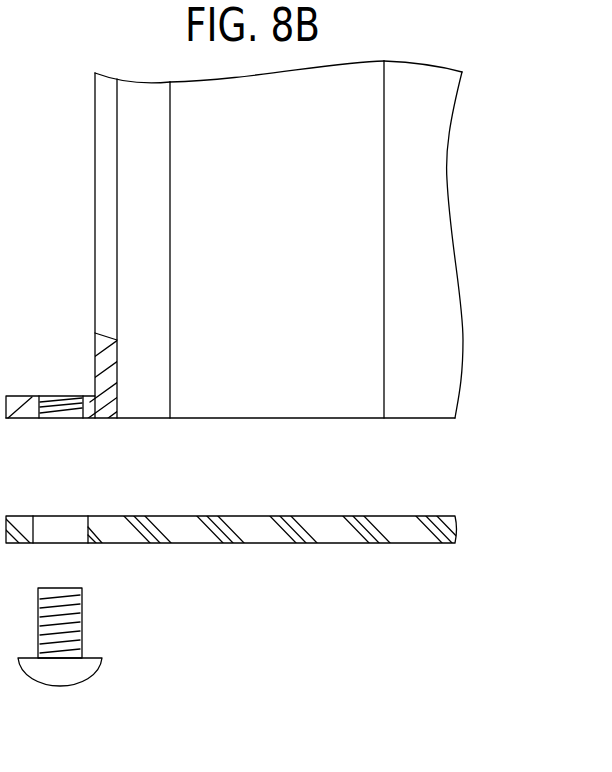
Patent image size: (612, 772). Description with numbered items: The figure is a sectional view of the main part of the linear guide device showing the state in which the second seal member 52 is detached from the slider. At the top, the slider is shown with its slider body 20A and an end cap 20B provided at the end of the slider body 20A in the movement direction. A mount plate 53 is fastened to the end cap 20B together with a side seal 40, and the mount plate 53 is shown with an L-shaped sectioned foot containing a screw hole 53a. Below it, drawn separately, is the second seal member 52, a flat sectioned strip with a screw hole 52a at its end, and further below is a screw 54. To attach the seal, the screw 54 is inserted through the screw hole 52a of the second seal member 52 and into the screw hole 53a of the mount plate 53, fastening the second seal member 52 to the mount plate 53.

The mount plate 53 is at (100, 123).
The screw hole 53a is at (50, 396).
The side seal 40 is at (143, 413).
The end cap 20B is at (266, 413).
The slider body 20A is at (420, 413).
The second seal member 52 is at (267, 540).
The screw hole 52a is at (37, 531).
The screw 54 is at (55, 686).